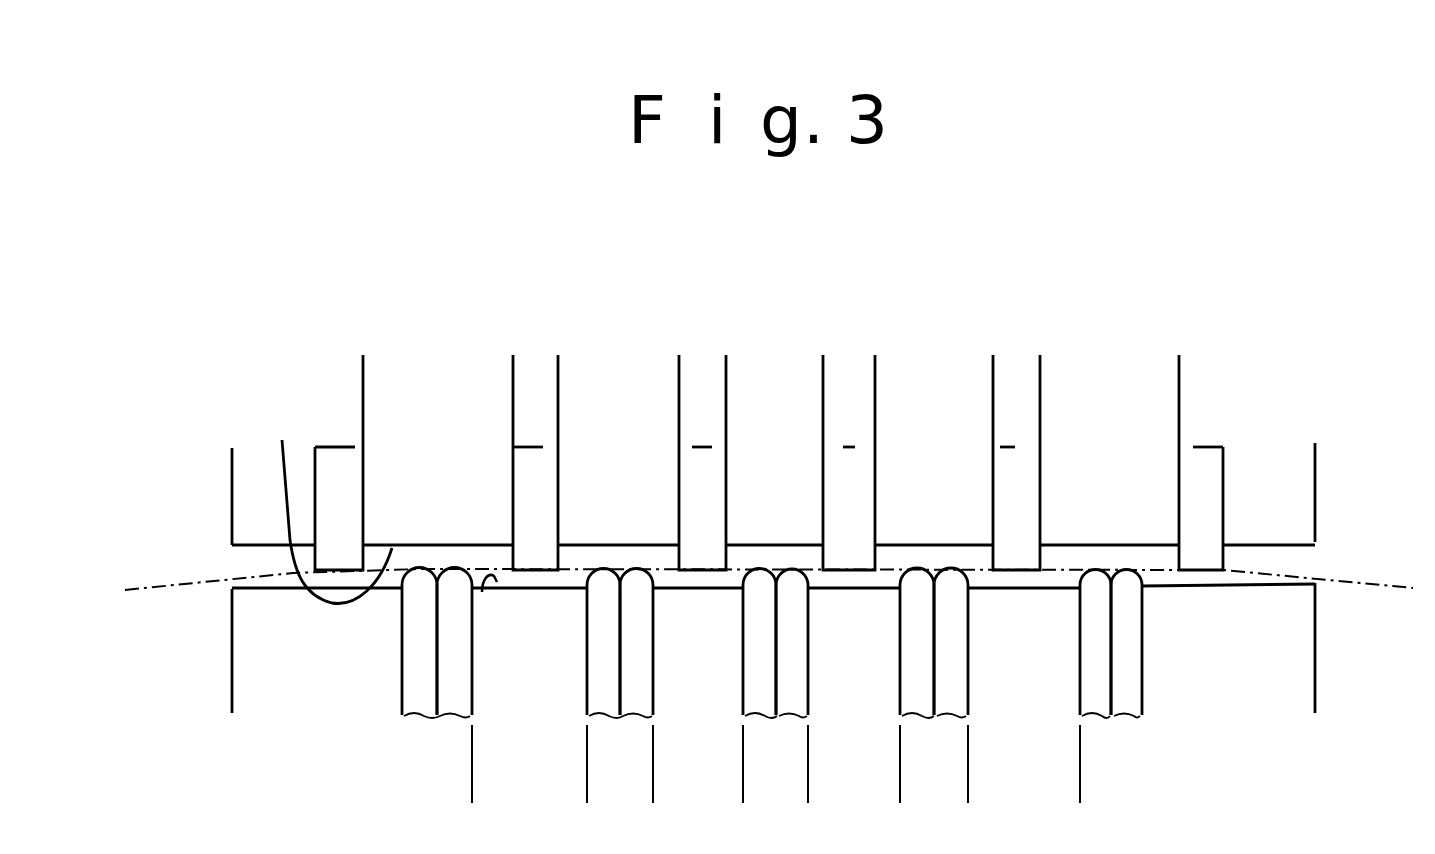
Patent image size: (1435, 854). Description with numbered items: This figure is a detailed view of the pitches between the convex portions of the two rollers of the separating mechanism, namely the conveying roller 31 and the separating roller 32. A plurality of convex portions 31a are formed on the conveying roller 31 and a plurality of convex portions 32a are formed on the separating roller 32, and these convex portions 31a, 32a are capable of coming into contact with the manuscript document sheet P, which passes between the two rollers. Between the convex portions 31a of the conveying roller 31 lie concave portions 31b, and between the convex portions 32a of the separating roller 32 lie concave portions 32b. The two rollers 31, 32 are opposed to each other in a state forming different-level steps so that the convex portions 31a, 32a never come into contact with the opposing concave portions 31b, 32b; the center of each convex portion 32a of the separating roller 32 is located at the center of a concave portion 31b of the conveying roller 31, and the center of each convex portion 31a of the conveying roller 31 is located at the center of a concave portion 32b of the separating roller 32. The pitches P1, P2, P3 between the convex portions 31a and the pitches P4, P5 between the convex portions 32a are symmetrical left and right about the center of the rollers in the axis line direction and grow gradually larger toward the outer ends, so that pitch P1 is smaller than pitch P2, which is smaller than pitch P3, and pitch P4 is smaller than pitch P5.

The conveying roller 31 is at (1288, 497).
The convex portions of the conveying roller 31a is at (1195, 447).
The concave portions of the conveying roller 31b is at (311, 501).
The separating roller 32 is at (1288, 662).
The convex portions of the separating roller 32a is at (1148, 686).
The concave portions of the separating roller 32b is at (482, 592).
The manuscript document sheet P is at (1402, 589).
The pitch P1 is at (823, 373).
The pitch P2 is at (679, 373).
The pitch P3 is at (513, 373).
The pitch P4 is at (743, 768).
The pitch P5 is at (587, 768).